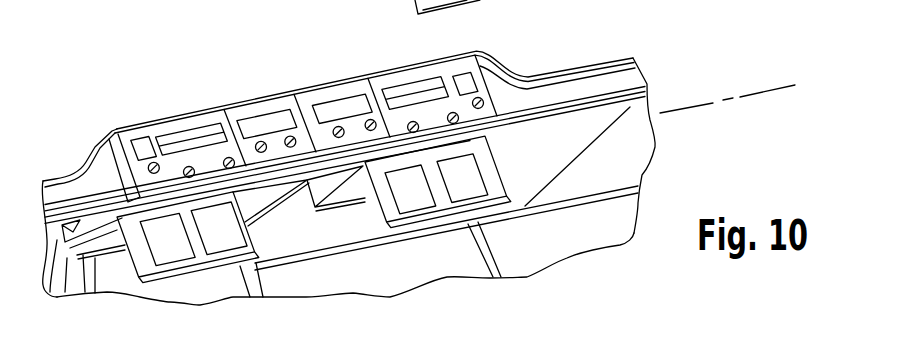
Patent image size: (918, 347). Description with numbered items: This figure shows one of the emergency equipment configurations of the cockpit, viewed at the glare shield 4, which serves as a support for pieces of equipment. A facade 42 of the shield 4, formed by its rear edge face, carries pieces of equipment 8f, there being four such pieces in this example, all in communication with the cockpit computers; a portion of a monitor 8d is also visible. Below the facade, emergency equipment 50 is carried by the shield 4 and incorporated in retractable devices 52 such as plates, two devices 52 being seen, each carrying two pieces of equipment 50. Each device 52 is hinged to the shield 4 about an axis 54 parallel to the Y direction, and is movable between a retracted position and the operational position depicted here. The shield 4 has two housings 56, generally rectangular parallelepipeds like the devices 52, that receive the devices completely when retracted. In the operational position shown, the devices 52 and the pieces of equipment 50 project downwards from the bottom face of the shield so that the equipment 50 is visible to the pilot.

The glare shield 4 is at (652, 76).
The lower floor panel portion 8d is at (590, 227).
The pieces of equipment 8f is at (188, 137).
The facade 42 is at (587, 80).
The emergency equipment 50 is at (170, 238).
The retractable device 52 is at (127, 233).
The axis 54 is at (770, 88).
The housing 56 is at (102, 250).